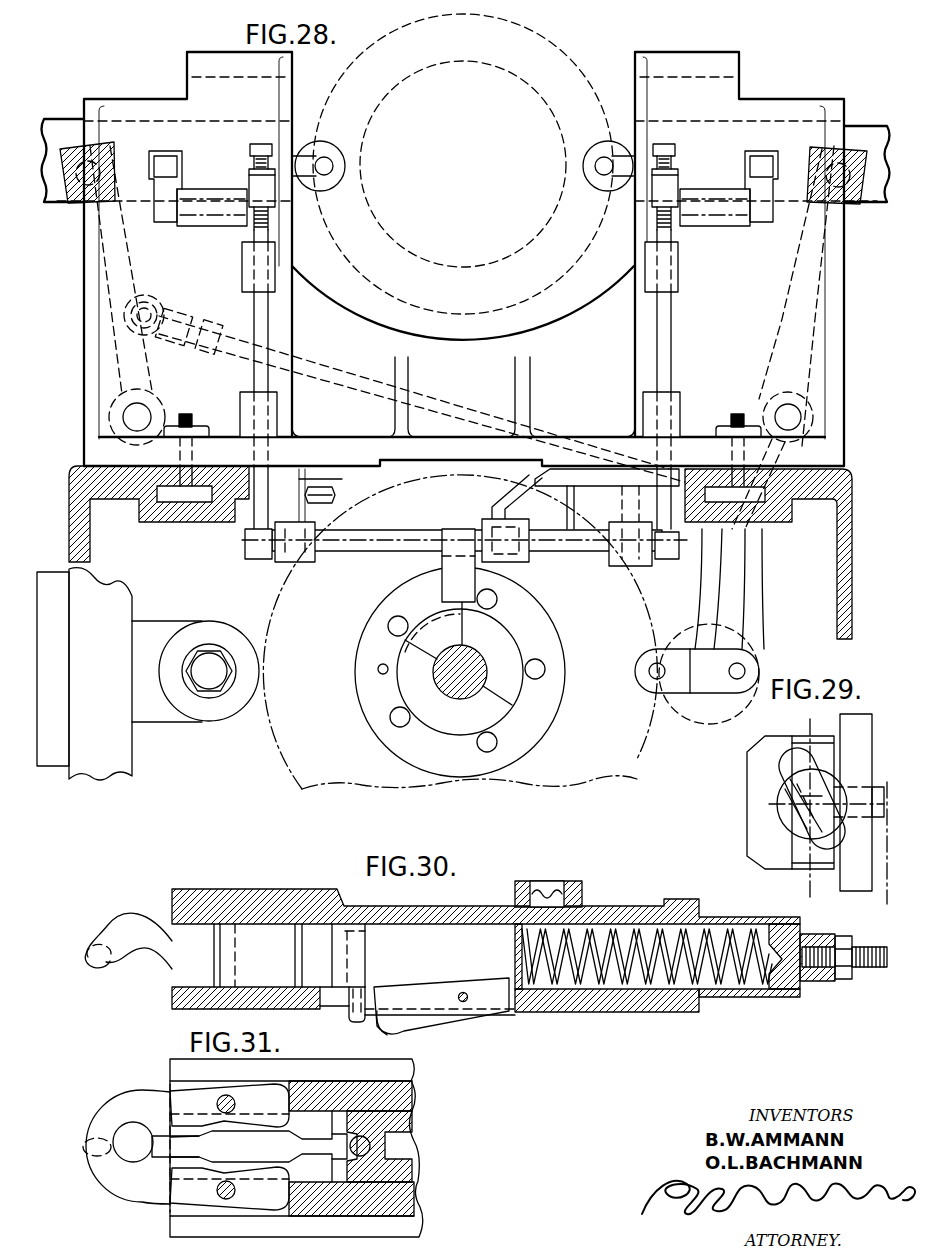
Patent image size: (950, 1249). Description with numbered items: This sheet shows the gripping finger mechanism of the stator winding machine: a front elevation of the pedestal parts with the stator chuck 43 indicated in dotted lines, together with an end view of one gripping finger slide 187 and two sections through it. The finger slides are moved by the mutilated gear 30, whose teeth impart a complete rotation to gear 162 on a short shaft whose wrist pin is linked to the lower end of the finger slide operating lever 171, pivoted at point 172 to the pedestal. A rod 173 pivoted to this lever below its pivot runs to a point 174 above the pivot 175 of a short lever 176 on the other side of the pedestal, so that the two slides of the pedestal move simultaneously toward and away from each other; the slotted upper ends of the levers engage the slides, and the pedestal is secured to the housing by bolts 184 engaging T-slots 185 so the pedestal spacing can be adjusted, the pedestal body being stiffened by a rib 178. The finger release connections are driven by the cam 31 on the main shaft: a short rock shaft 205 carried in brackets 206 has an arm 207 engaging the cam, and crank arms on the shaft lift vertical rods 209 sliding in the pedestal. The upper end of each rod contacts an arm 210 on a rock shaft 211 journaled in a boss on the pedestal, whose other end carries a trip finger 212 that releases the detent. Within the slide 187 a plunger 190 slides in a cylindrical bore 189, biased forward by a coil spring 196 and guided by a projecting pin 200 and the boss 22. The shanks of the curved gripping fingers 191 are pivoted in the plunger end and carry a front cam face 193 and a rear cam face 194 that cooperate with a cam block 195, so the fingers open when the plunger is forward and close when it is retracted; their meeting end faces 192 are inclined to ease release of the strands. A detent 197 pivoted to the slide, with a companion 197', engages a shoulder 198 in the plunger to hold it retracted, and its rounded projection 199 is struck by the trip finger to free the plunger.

In FIG. 28, the drum 43 is at (545, 34).
In FIG. 28, the trip finger 212 is at (160, 193).
In FIG. 28, the rock shaft 211 is at (197, 207).
In FIG. 28, the arm 210 is at (265, 192).
In FIG. 28, the short lever 176 is at (86, 272).
In FIG. 28, the connection point 174 is at (150, 312).
In FIG. 28, the pivot 175 is at (137, 417).
In FIG. 28, the bolts 184 is at (230, 412).
In FIG. 28, the T-slots 185 is at (193, 497).
In FIG. 28, the vertical rod 209 is at (258, 338).
In FIG. 28, the rib 178 is at (438, 403).
In FIG. 28, the finger slide operating lever 171 is at (792, 307).
In FIG. 28, the pivot point 172 is at (773, 407).
In FIG. 28, the rod 173 is at (760, 533).
In FIG. 28, the brackets 206 is at (325, 482).
In FIG. 28, the rock shaft 205 is at (395, 547).
In FIG. 28, the arm 207 is at (455, 570).
In FIG. 28, the cam 31 is at (488, 642).
In FIG. 29, the cam 31 is at (815, 804).
In FIG. 28, the shaft 22 is at (480, 672).
In FIG. 28, the mutilated gear 30 is at (647, 619).
In FIG. 29, the mutilated gear 30 is at (767, 805).
In FIG. 28, the gear 162 is at (678, 713).
In FIG. 29, the gripping fingers 191 is at (795, 762).
In FIG. 30, the gripping fingers 191 is at (147, 947).
In FIG. 31, the gripping fingers 191 is at (137, 1110).
In FIG. 29, the meeting end faces 192 is at (812, 800).
In FIG. 30, the meeting end faces 192 is at (97, 957).
In FIG. 31, the meeting end faces 192 is at (88, 1148).
In FIG. 29, the rounded projection 199 is at (877, 790).
In FIG. 30, the rounded projection 199 is at (400, 1032).
In FIG. 30, the gripping finger slide 187 is at (452, 910).
In FIG. 30, the cam block 195 is at (258, 955).
In FIG. 31, the cam block 195 is at (249, 1146).
In FIG. 30, the plunger 190 is at (370, 955).
In FIG. 31, the plunger 190 is at (412, 1123).
In FIG. 30, the shoulder 198 is at (488, 984).
In FIG. 30, the projecting pin 200 is at (355, 1023).
In FIG. 30, the detent 197 is at (440, 1021).
In FIG. 30, the lever 197' is at (451, 1045).
In FIG. 30, the cylindrical bore 189 is at (555, 1013).
In FIG. 30, the coil spring 196 is at (623, 987).
In FIG. 31, the rear cam face 194 is at (260, 1123).
In FIG. 31, the front cam face 193 is at (197, 1160).